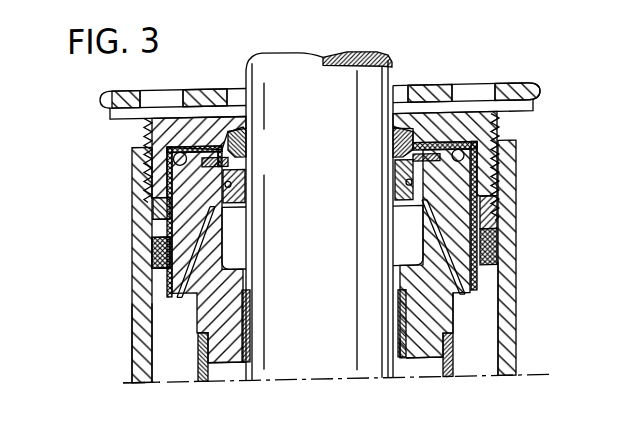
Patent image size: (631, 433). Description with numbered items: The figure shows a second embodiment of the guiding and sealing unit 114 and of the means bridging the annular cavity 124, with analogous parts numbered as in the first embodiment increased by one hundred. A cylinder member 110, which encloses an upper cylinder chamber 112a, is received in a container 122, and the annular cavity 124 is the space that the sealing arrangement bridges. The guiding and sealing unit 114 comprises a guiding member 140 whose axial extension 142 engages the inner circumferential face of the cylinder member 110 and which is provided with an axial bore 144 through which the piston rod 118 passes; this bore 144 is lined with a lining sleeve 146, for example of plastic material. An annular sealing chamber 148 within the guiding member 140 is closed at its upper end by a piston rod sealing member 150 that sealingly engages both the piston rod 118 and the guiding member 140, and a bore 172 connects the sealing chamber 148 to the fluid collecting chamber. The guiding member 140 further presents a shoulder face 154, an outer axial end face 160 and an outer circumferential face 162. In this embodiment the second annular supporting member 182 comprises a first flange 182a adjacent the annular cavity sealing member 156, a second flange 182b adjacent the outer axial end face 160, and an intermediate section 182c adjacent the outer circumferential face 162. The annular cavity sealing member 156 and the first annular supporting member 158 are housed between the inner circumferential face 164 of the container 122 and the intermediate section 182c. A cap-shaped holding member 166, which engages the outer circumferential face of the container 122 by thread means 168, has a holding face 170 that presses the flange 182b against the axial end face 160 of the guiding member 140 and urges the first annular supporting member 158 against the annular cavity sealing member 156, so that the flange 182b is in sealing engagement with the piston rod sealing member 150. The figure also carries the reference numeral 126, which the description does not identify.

The cylinder member 110 is at (457, 360).
The upper cylinder chamber 112a is at (414, 370).
The guiding and sealing unit 114 is at (444, 206).
The piston rod 118 is at (328, 163).
The container 122 is at (505, 316).
The annular cavity 124 is at (488, 356).
The threads 126 is at (490, 156).
The guiding member 140 is at (150, 309).
The axial extension 142 is at (228, 350).
The axial bore 144 is at (403, 252).
The lining sleeve 146 is at (392, 328).
The annular sealing chamber 148 is at (240, 258).
The piston rod sealing member 150 is at (247, 138).
The shoulder face 154 is at (252, 324).
The annular cavity sealing member 156 is at (150, 267).
The first annular supporting member 158 is at (155, 242).
The outer axial end face 160 is at (148, 163).
The outer circumferential face 162 is at (232, 210).
The inner circumferential face 164 is at (155, 347).
The holding member 166 is at (157, 121).
The thread means 168 is at (510, 170).
The holding face 170 is at (445, 138).
The bore 172 is at (232, 239).
The second annular supporting member 182 is at (133, 179).
The first flange 182a is at (150, 275).
The second flange 182b is at (190, 148).
The intermediate section 182c is at (150, 203).